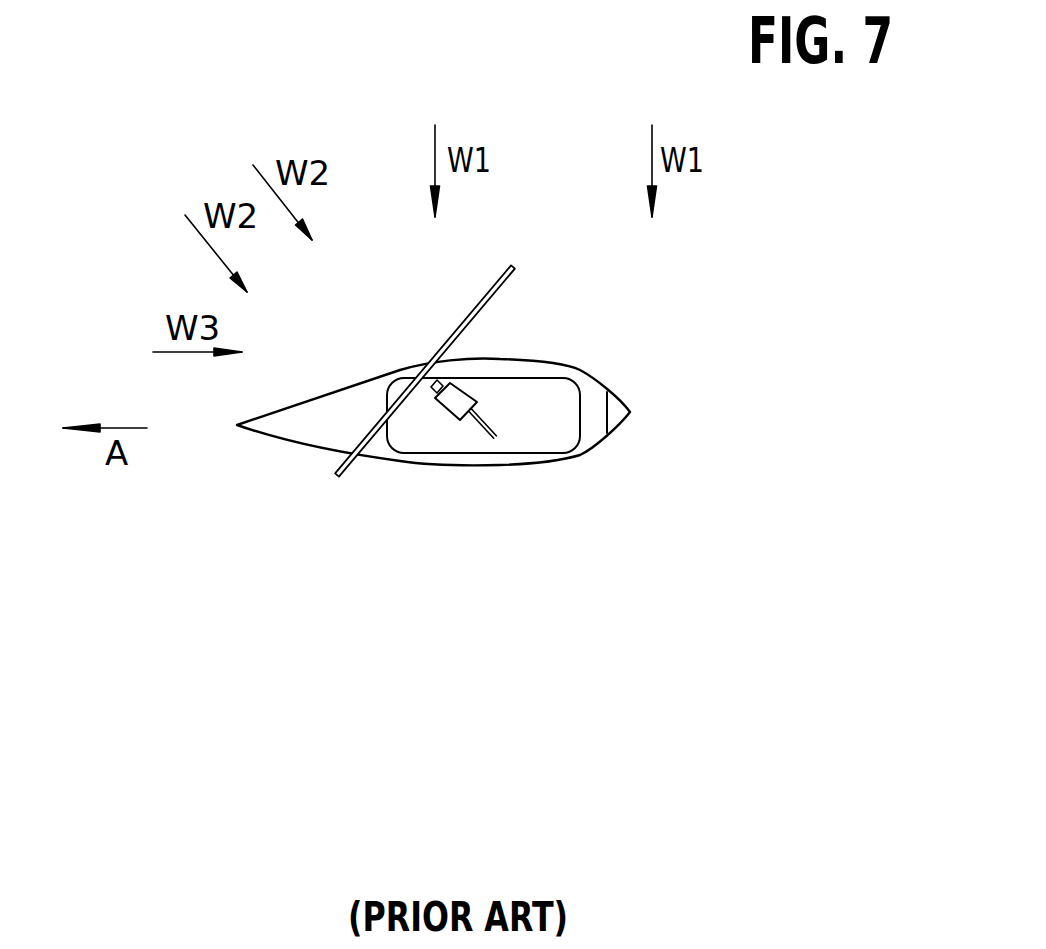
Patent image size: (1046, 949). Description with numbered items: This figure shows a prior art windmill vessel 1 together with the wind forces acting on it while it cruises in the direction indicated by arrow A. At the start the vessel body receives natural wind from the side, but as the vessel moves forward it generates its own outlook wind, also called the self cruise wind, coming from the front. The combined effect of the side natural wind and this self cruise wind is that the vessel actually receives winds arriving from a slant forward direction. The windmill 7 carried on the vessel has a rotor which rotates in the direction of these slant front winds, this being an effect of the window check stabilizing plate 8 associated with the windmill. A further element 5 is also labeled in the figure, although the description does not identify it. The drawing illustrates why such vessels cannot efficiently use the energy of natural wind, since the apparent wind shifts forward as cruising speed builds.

The windmill vessel 1 is at (277, 428).
The mast joint block 5 is at (452, 407).
The windmill 7 is at (497, 293).
The window check stabilizing plate 8 is at (495, 432).